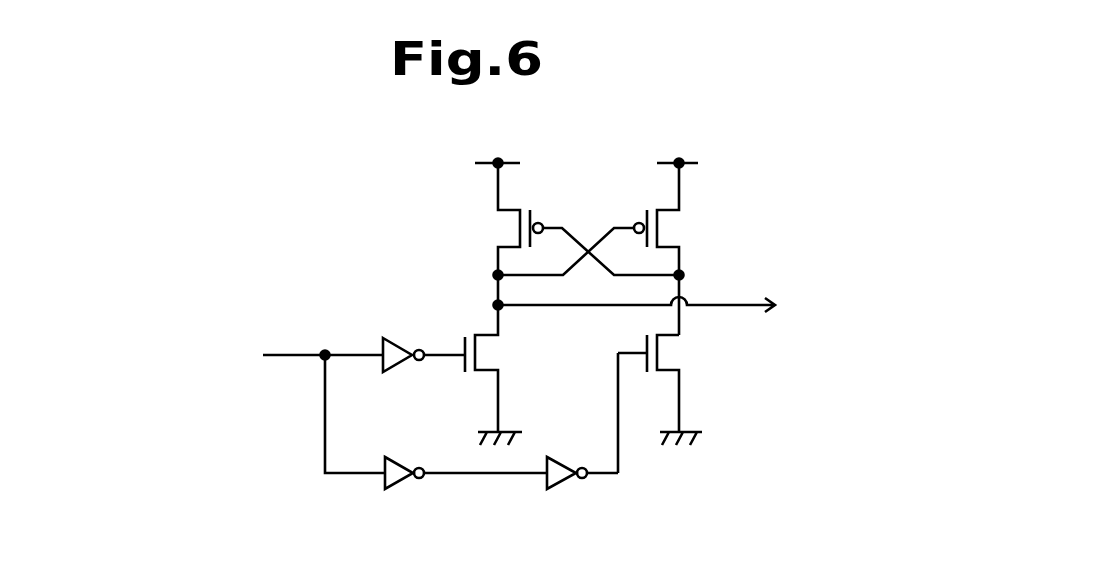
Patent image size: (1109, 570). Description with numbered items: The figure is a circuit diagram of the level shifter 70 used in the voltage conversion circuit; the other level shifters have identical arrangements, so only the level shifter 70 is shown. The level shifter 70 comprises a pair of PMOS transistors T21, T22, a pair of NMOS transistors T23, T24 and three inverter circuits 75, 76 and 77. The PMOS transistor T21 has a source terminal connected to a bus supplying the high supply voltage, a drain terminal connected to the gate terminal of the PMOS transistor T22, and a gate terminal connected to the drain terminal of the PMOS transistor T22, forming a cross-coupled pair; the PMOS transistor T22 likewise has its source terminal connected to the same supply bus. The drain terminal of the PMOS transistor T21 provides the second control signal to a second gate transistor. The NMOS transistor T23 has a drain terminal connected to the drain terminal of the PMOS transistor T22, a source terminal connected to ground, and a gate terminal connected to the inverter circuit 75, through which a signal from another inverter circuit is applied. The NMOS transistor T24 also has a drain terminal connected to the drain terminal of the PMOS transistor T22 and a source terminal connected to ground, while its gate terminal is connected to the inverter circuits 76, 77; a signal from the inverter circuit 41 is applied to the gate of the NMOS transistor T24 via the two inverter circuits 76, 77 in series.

The level shifter 70 is at (809, 170).
The PMOS transistor T21 is at (520, 210).
The PMOS transistor T22 is at (660, 210).
The NMOS transistor T23 is at (491, 335).
The NMOS transistor T24 is at (672, 361).
The inverter circuit 41 is at (202, 341).
The inverter circuit 75 is at (402, 363).
The inverter circuit 76 is at (400, 480).
The inverter circuit 77 is at (567, 480).